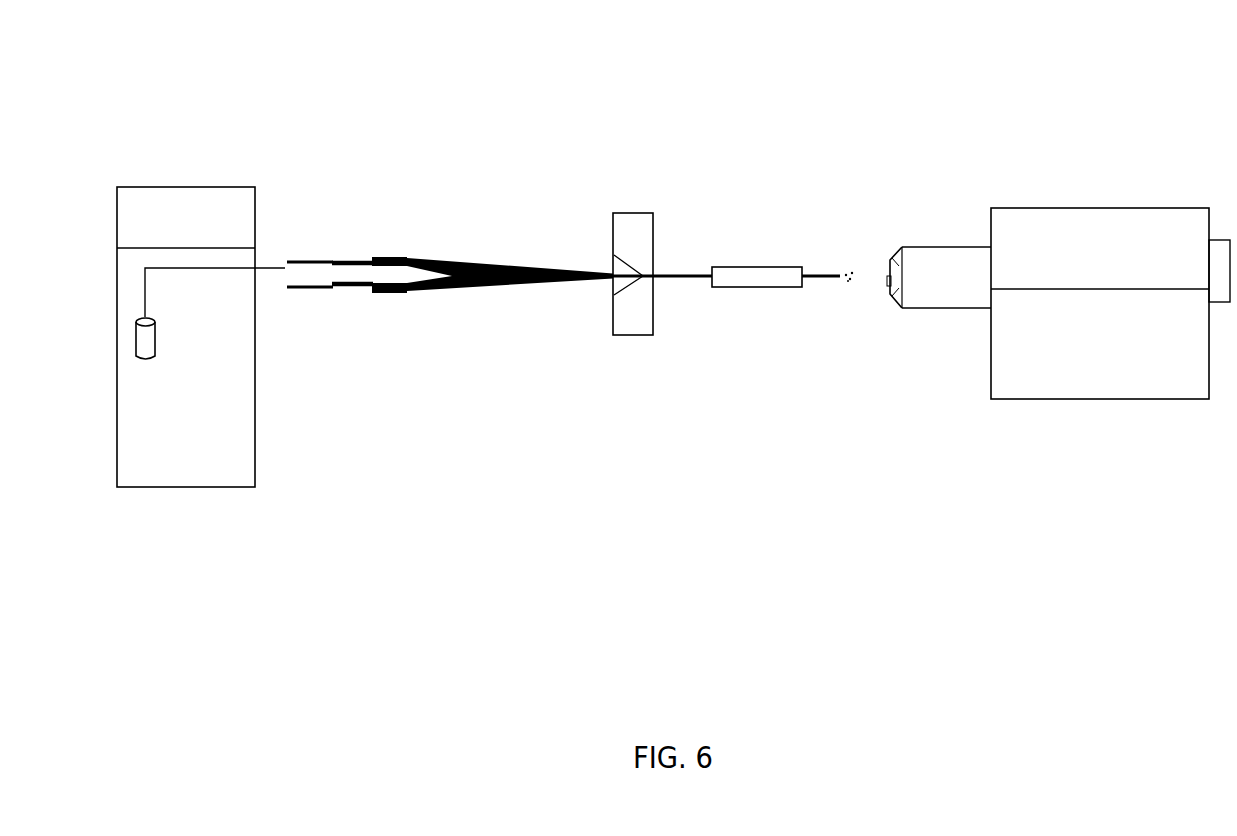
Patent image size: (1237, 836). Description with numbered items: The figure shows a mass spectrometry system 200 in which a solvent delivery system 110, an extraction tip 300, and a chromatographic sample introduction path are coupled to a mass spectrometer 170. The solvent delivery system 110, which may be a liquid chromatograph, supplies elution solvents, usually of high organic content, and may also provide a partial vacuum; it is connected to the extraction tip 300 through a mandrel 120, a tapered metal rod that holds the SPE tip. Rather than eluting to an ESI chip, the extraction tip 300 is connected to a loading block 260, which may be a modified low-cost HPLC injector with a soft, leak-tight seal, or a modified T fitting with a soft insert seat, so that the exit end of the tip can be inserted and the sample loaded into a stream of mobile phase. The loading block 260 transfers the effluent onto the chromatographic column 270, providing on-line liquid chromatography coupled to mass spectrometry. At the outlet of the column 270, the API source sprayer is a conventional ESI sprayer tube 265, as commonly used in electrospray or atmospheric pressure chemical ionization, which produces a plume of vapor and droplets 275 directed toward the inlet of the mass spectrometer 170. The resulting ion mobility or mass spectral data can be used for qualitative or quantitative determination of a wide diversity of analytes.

The solvent delivery system 110 is at (115, 440).
The mandrel 120 is at (320, 302).
The system 200 is at (388, 205).
The extraction tip 300 is at (515, 267).
The loading block 260 is at (638, 212).
The chromatographic column 270 is at (770, 266).
The plume of vapor and droplets 275 is at (860, 258).
The ESI sprayer tube 265 is at (842, 300).
The mass spectrometer 170 is at (1057, 205).